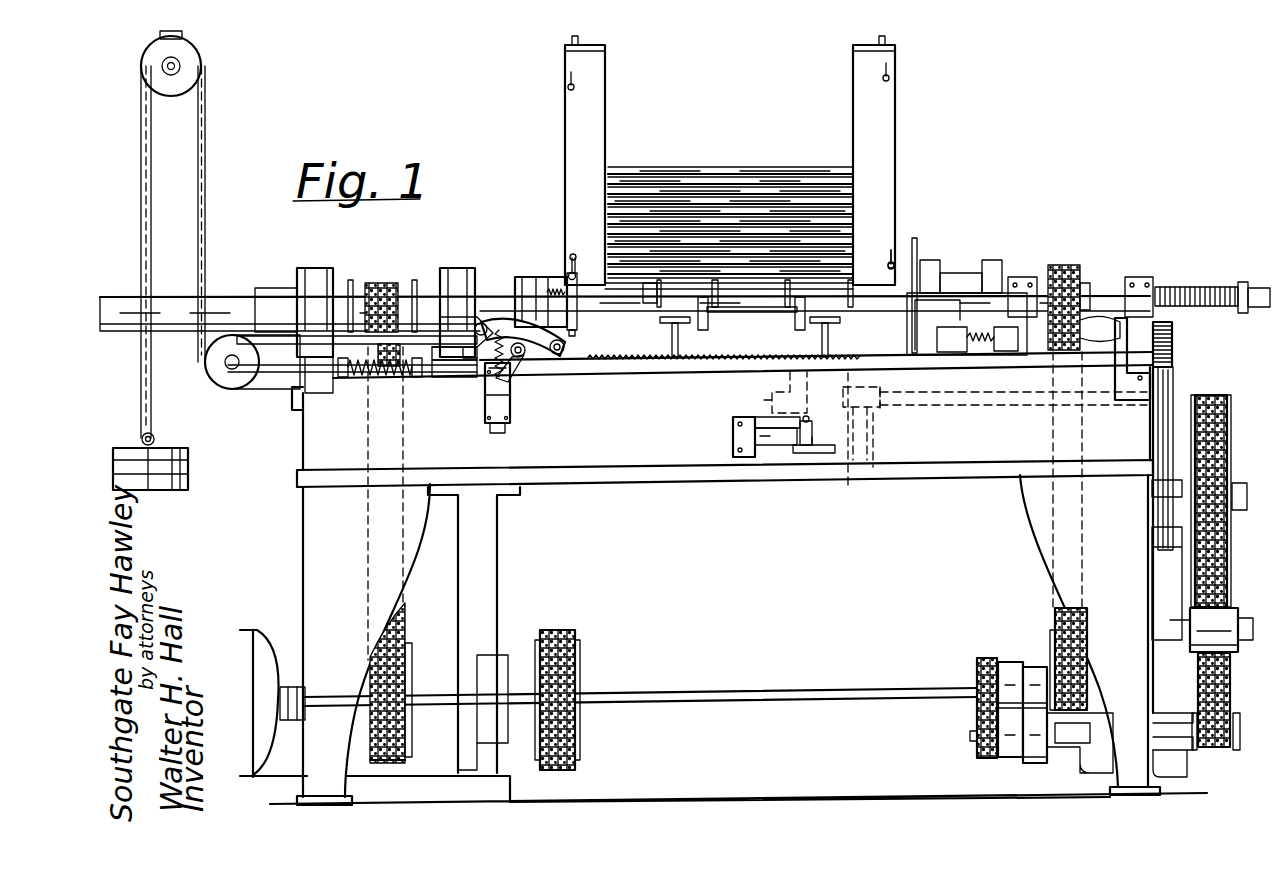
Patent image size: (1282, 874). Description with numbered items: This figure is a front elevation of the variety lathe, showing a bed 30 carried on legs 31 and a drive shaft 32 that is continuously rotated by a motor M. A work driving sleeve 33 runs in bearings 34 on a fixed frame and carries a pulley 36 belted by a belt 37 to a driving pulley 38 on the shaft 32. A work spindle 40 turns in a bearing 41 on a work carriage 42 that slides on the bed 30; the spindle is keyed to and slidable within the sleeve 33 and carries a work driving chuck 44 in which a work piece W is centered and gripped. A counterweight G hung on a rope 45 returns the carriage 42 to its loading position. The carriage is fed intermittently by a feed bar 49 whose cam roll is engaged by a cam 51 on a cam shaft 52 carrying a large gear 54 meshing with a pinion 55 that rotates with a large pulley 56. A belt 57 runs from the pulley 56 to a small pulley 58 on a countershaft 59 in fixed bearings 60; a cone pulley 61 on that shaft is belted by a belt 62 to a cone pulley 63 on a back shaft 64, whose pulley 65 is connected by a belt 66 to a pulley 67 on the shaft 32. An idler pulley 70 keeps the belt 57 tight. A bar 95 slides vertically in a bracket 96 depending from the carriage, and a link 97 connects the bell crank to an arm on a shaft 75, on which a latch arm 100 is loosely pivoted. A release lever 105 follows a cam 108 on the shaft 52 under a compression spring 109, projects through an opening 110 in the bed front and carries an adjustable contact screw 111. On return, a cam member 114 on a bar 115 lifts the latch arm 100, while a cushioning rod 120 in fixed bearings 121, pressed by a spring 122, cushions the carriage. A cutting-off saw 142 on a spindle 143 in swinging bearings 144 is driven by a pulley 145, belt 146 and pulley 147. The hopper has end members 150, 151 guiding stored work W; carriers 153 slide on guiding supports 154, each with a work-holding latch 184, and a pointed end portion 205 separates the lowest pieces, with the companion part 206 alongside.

The bed 30 is at (618, 477).
The legs 31 is at (315, 537).
The drive shaft 32 is at (436, 704).
The work driving sleeve 33 is at (428, 297).
The bearings 34 is at (314, 272).
The pulley 36 is at (364, 297).
The belt 37 is at (369, 452).
The driving pulley 38 is at (422, 634).
The work spindle 40 is at (510, 292).
The bearing 41 is at (528, 281).
The work carriage 42 is at (565, 372).
The work driving chuck 44 is at (580, 300).
The rope 45 is at (205, 278).
The feed bar 49 is at (748, 334).
The cam 51 is at (849, 477).
The cam shaft 52 is at (1017, 401).
The large gear 54 is at (1173, 346).
The pinion 55 is at (1160, 487).
The large pulley 56 is at (1232, 451).
The belt 57 is at (1226, 671).
The small pulley 58 is at (1240, 736).
The countershaft 59 is at (970, 742).
The fixed bearings 60 is at (1120, 360).
The cone pulley 61 is at (1008, 762).
The belt 62 is at (988, 677).
The cone pulley 63 is at (1012, 665).
The back shaft 64 is at (871, 697).
The pulley 65 is at (581, 643).
The belt 66 is at (570, 611).
The pulley 67 is at (581, 674).
The idler pulley 70 is at (1217, 625).
The shaft 75 is at (575, 347).
The bar 95 is at (500, 432).
The bracket 96 is at (508, 415).
The link 97 is at (524, 370).
The latch arm 100 is at (510, 326).
The release lever 105 is at (784, 446).
The cam 108 is at (775, 384).
The compression spring 109 is at (812, 420).
The opening 110 is at (752, 459).
The adjustable contact screw 111 is at (810, 455).
The cam member 114 is at (452, 348).
The bar 115 is at (262, 345).
The cushioning rod 120 is at (462, 372).
The fixed bearings 121 is at (345, 377).
The spring 122 is at (390, 376).
The cutting-off saw 142 is at (922, 233).
The spindle 143 is at (957, 280).
The swinging bearings 144 is at (933, 261).
The pulley 145 is at (1080, 273).
The belt 146 is at (1056, 610).
The pulley 147 is at (1053, 636).
The end member 150 is at (593, 97).
The end member 151 is at (863, 110).
The carriers 153 is at (663, 330).
The guiding supports 154 is at (698, 333).
The work-holding latch 184 is at (725, 313).
The pointed end portion 205 is at (648, 292).
The guide 206 is at (721, 291).
The counterweight G is at (186, 452).
The motor M is at (245, 599).
The work piece W is at (740, 175).